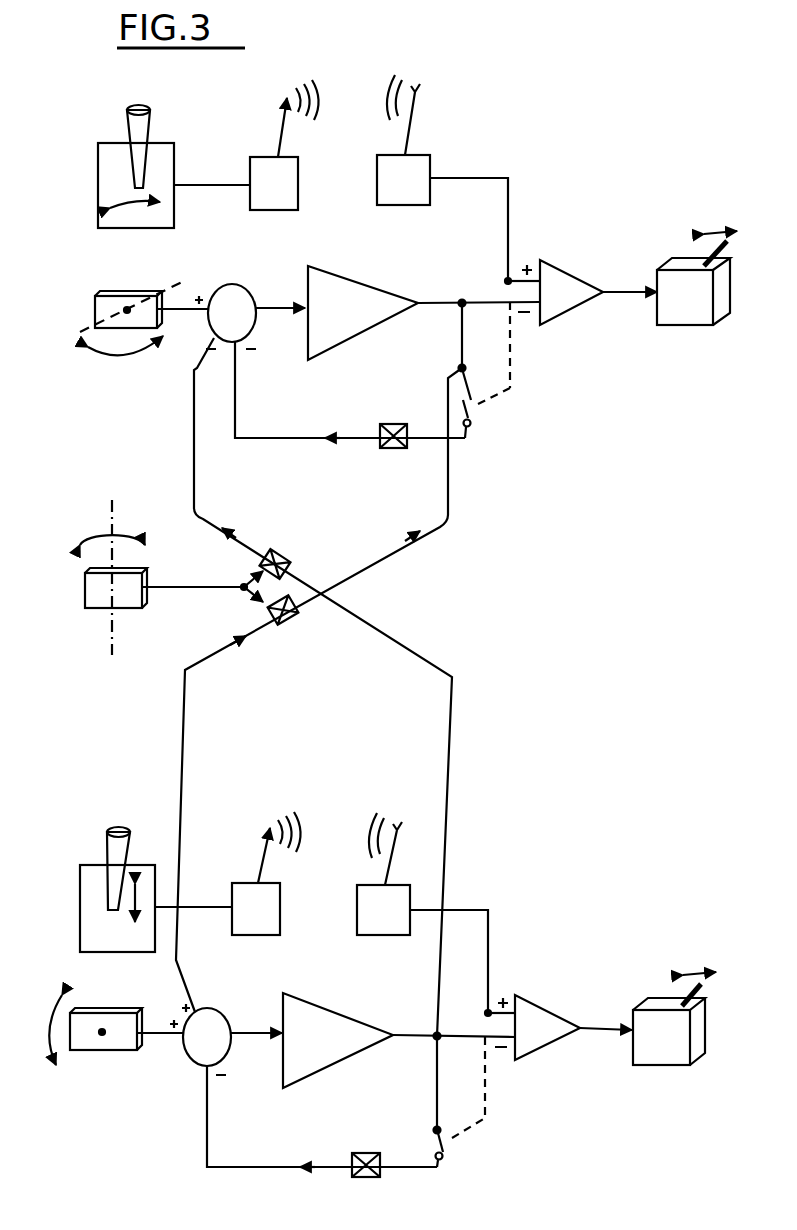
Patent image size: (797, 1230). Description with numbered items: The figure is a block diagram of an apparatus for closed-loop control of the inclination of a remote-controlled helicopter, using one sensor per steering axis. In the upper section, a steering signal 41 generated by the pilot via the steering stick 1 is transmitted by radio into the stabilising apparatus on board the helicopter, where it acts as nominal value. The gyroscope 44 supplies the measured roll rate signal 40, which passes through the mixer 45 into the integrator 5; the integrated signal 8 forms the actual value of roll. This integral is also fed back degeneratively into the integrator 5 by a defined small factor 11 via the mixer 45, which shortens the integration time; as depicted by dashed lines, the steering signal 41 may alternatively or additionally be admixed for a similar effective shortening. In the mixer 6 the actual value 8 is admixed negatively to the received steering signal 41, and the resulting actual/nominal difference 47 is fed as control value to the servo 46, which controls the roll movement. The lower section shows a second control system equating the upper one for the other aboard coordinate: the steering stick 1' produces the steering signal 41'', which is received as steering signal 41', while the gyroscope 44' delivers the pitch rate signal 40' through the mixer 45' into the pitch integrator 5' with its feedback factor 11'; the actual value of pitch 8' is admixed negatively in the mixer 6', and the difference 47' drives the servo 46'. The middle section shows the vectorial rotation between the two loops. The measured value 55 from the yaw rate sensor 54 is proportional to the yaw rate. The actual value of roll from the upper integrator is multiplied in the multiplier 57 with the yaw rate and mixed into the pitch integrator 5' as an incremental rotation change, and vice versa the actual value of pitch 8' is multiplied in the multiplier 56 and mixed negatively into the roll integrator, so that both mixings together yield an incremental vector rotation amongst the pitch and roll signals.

The steering stick 1 is at (136, 166).
The steering signal 41 is at (342, 218).
The gyroscope 44 is at (131, 322).
The roll rate signal 40 is at (182, 316).
The mixer 45 is at (255, 302).
The integrator 5 is at (363, 314).
The actual value 8 is at (479, 318).
The mixer 6 is at (555, 292).
The actual/nominal difference 47 is at (630, 275).
The servo 46 is at (697, 278).
The defined small factor 11 is at (372, 408).
The yaw rate sensor 54 is at (113, 577).
The measured value 55 is at (202, 581).
The multiplier 56 is at (285, 554).
The multiplier 57 is at (288, 624).
The steering stick 1' is at (120, 889).
The steering signal 41'' is at (193, 894).
The steering signal 41' is at (450, 949).
The gyroscope 44' is at (95, 1036).
The inclination rate signal 40' is at (160, 1040).
The mixer 45' is at (232, 1027).
The pitch integrator 5' is at (338, 1043).
The actual value of pitch 8' is at (454, 1050).
The mixer 6' is at (534, 1027).
The actual/nominal difference 47' is at (606, 1013).
The servo 46' is at (674, 1018).
The defined small factor 11' is at (346, 1106).